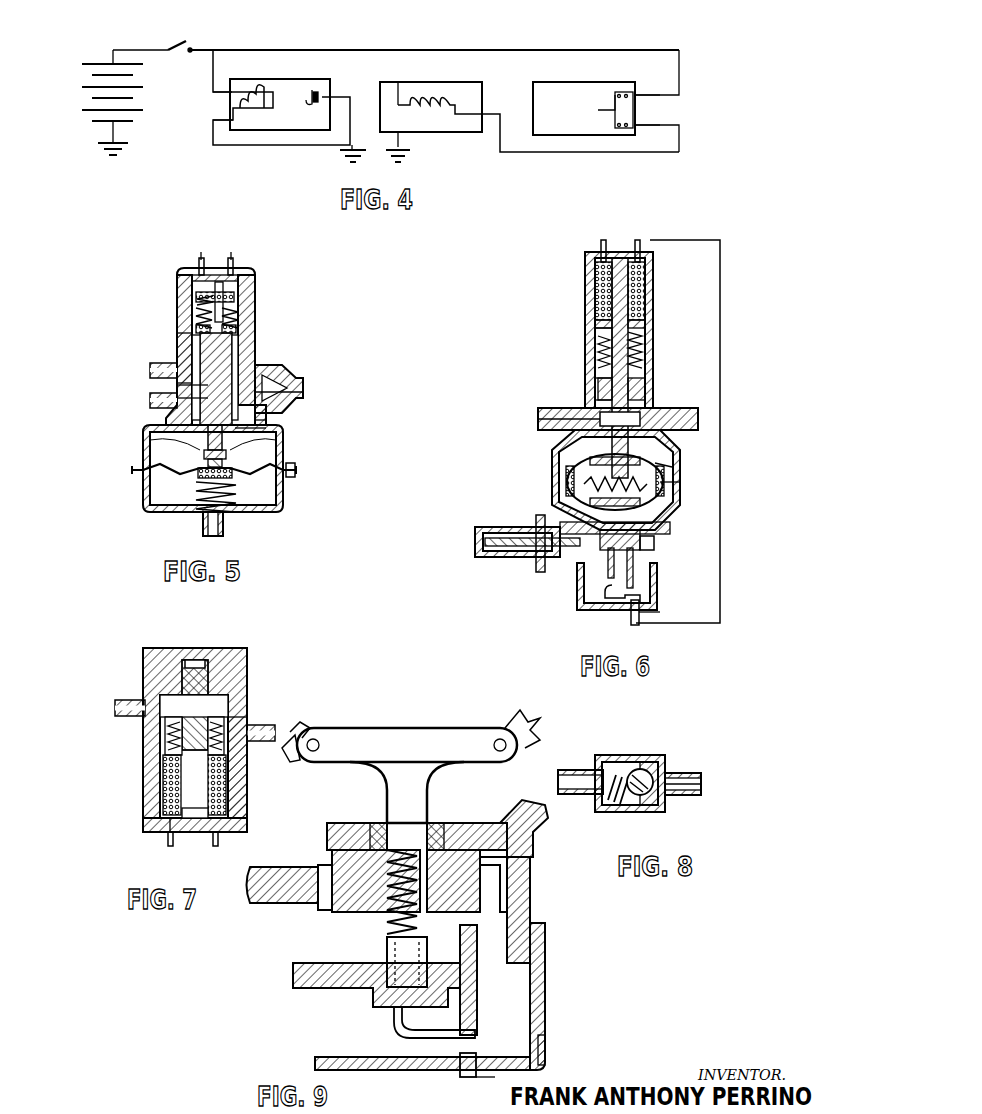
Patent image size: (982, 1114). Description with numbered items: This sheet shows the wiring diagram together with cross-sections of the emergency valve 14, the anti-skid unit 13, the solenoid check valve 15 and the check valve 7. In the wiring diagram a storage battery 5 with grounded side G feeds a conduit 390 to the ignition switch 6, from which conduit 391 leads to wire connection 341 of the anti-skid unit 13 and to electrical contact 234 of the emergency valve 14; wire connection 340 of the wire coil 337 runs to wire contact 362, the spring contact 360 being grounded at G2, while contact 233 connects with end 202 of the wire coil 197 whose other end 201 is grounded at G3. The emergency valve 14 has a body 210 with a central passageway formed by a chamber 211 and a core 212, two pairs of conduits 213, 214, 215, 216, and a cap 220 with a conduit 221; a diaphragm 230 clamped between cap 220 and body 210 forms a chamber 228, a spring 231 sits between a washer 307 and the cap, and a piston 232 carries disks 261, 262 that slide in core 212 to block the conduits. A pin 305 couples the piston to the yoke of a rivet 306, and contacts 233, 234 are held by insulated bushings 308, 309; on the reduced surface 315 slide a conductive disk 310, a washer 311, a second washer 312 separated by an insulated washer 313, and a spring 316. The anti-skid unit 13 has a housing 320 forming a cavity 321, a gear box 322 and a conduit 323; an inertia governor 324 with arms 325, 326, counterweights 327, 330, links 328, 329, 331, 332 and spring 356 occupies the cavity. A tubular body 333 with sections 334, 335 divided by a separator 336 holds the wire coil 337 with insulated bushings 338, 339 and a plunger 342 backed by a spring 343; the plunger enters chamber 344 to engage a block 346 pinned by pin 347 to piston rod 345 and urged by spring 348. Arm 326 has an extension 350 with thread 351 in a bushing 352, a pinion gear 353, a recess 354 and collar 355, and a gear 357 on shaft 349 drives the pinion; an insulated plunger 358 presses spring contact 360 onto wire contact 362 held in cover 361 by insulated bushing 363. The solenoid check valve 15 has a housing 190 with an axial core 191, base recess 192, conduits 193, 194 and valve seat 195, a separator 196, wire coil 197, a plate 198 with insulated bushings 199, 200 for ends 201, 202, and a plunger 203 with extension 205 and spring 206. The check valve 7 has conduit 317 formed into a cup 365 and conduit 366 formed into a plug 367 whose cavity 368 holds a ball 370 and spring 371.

In FIG. 4, the motor vehicle storage battery 5 is at (82, 130).
In FIG. 4, the ignition switch 6 is at (173, 62).
In FIG. 4, the grounded side of the battery G is at (113, 160).
In FIG. 4, the ground G2 is at (352, 165).
In FIG. 4, the ground G3 is at (399, 168).
In FIG. 4, the anti-skid unit 13 is at (264, 149).
In FIG. 6, the anti-skid unit 13 is at (516, 334).
In FIG. 4, the emergency valve 14 is at (566, 152).
In FIG. 5, the emergency valve 14 is at (272, 309).
In FIG. 4, the solenoid check valve 15 is at (448, 144).
In FIG. 7, the solenoid check valve 15 is at (116, 665).
In FIG. 8, the check valve 7 is at (668, 748).
In FIG. 7, the housing 190 is at (240, 660).
In FIG. 7, the axial core 191 is at (165, 740).
In FIG. 7, the base recess 192 is at (205, 655).
In FIG. 7, the conduit 193 is at (270, 725).
In FIG. 7, the conduit 194 is at (115, 708).
In FIG. 7, the valve seat 195 is at (162, 722).
In FIG. 7, the separator 196 is at (165, 765).
In FIG. 4, the wire coil 197 is at (436, 100).
In FIG. 7, the wire coil 197 is at (165, 800).
In FIG. 7, the plate 198 is at (143, 828).
In FIG. 7, the insulated bushing 199 is at (168, 840).
In FIG. 7, the insulated bushing 200 is at (220, 838).
In FIG. 4, the end of wire coil 201 is at (398, 110).
In FIG. 7, the end of wire coil 201 is at (170, 840).
In FIG. 4, the end of wire coil 202 is at (470, 110).
In FIG. 7, the end of wire coil 202 is at (215, 846).
In FIG. 7, the plunger 203 is at (195, 660).
In FIG. 7, the extension 205 is at (184, 690).
In FIG. 7, the spring 206 is at (238, 770).
In FIG. 5, the body 210 is at (262, 420).
In FIG. 5, the chamber 211 is at (262, 428).
In FIG. 5, the core 212 is at (255, 445).
In FIG. 5, the conduit 213 is at (280, 398).
In FIG. 5, the conduit 214 is at (150, 402).
In FIG. 5, the conduit 215 is at (275, 368).
In FIG. 5, the conduit 216 is at (150, 368).
In FIG. 5, the cap 220 is at (284, 490).
In FIG. 5, the conduit 221 is at (223, 530).
In FIG. 5, the chamber 228 is at (284, 508).
In FIG. 5, the diaphragm 230 is at (232, 476).
In FIG. 5, the spring 231 is at (210, 522).
In FIG. 5, the piston 232 is at (298, 468).
In FIG. 4, the electrical contact 233 is at (665, 128).
In FIG. 5, the electrical contact 233 is at (234, 254).
In FIG. 4, the electrical contact 234 is at (660, 100).
In FIG. 5, the electrical contact 234 is at (198, 254).
In FIG. 5, the disk 261 is at (180, 408).
In FIG. 5, the disk 262 is at (180, 388).
In FIG. 5, the pin 305 is at (205, 458).
In FIG. 5, the rivet 306 is at (130, 468).
In FIG. 5, the washer 307 is at (196, 488).
In FIG. 5, the insulated bushing 308 is at (232, 258).
In FIG. 5, the insulated bushing 309 is at (202, 258).
In FIG. 4, the disk 310 is at (620, 93).
In FIG. 5, the disk 310 is at (195, 293).
In FIG. 5, the washer 311 is at (195, 345).
In FIG. 5, the washer 312 is at (196, 302).
In FIG. 5, the insulated washer 313 is at (240, 283).
In FIG. 4, the surface 315 is at (598, 108).
In FIG. 5, the surface 315 is at (196, 322).
In FIG. 5, the spring 316 is at (240, 328).
In FIG. 8, the conduit 317 is at (562, 770).
In FIG. 6, the housing 320 is at (670, 484).
In FIG. 9, the housing 320 is at (525, 805).
In FIG. 6, the cavity 321 is at (660, 465).
In FIG. 6, the gear box 322 is at (476, 548).
In FIG. 9, the gear box 322 is at (293, 978).
In FIG. 6, the conduit 323 is at (700, 418).
In FIG. 6, the inertia governor 324 is at (552, 442).
In FIG. 6, the arm 325 is at (690, 445).
In FIG. 6, the arm 326 is at (660, 540).
In FIG. 9, the arm 326 is at (430, 728).
In FIG. 6, the counterweight 327 is at (655, 505).
In FIG. 6, the link 328 is at (672, 467).
In FIG. 6, the link 329 is at (660, 520).
In FIG. 9, the link 329 is at (522, 722).
In FIG. 6, the counterweight 330 is at (584, 484).
In FIG. 6, the link 331 is at (592, 460).
In FIG. 6, the link 332 is at (562, 528).
In FIG. 9, the link 332 is at (318, 730).
In FIG. 6, the tubular body 333 is at (648, 350).
In FIG. 6, the section 334 is at (655, 372).
In FIG. 6, the section 335 is at (646, 300).
In FIG. 6, the separator 336 is at (648, 330).
In FIG. 4, the wire coil 337 is at (252, 103).
In FIG. 6, the wire coil 337 is at (655, 265).
In FIG. 6, the insulated bushing 338 is at (665, 248).
In FIG. 6, the insulated bushing 339 is at (612, 258).
In FIG. 4, the wire connection 340 is at (215, 118).
In FIG. 6, the wire connection 340 is at (637, 240).
In FIG. 4, the wire connection 341 is at (218, 92).
In FIG. 6, the wire connection 341 is at (602, 240).
In FIG. 6, the plunger 342 is at (597, 270).
In FIG. 6, the spring 343 is at (597, 325).
In FIG. 6, the chamber 344 is at (648, 390).
In FIG. 6, the piston rod 345 is at (560, 422).
In FIG. 6, the block 346 is at (596, 400).
In FIG. 6, the pin 347 is at (597, 392).
In FIG. 6, the spring 348 is at (603, 415).
In FIG. 6, the shaft 349 is at (600, 565).
In FIG. 9, the extension 350 is at (430, 790).
In FIG. 9, the thread 351 is at (390, 920).
In FIG. 9, the bushing 352 is at (378, 823).
In FIG. 6, the pinion gear 353 is at (654, 542).
In FIG. 9, the pinion gear 353 is at (332, 855).
In FIG. 9, the recess 354 is at (400, 992).
In FIG. 9, the collar 355 is at (387, 975).
In FIG. 6, the spring 356 is at (568, 478).
In FIG. 6, the gear 357 is at (538, 565).
In FIG. 9, the gear 357 is at (255, 895).
In FIG. 6, the plunger 358 is at (640, 558).
In FIG. 9, the plunger 358 is at (472, 960).
In FIG. 4, the spring contact 360 is at (306, 96).
In FIG. 6, the spring contact 360 is at (615, 608).
In FIG. 9, the spring contact 360 is at (490, 1040).
In FIG. 6, the cover 361 is at (645, 596).
In FIG. 9, the cover 361 is at (546, 950).
In FIG. 4, the wire contact 362 is at (318, 95).
In FIG. 6, the wire contact 362 is at (660, 616).
In FIG. 9, the wire contact 362 is at (547, 1050).
In FIG. 6, the insulated bushing 363 is at (634, 623).
In FIG. 9, the insulated bushing 363 is at (460, 1075).
In FIG. 8, the cup 365 is at (622, 755).
In FIG. 8, the conduit 366 is at (675, 795).
In FIG. 8, the plug 367 is at (665, 758).
In FIG. 8, the cavity 368 is at (642, 793).
In FIG. 8, the ball 370 is at (700, 781).
In FIG. 8, the spring 371 is at (602, 810).
In FIG. 4, the conduit 390 is at (113, 49).
In FIG. 4, the conduit 391 is at (245, 48).